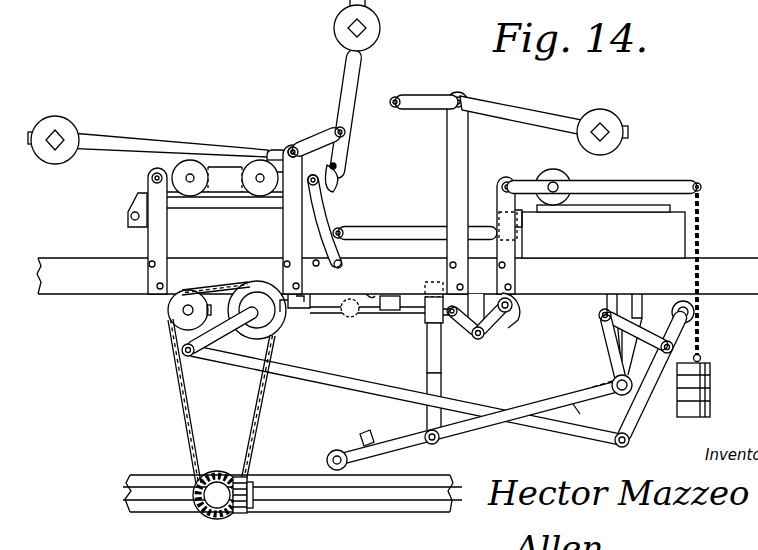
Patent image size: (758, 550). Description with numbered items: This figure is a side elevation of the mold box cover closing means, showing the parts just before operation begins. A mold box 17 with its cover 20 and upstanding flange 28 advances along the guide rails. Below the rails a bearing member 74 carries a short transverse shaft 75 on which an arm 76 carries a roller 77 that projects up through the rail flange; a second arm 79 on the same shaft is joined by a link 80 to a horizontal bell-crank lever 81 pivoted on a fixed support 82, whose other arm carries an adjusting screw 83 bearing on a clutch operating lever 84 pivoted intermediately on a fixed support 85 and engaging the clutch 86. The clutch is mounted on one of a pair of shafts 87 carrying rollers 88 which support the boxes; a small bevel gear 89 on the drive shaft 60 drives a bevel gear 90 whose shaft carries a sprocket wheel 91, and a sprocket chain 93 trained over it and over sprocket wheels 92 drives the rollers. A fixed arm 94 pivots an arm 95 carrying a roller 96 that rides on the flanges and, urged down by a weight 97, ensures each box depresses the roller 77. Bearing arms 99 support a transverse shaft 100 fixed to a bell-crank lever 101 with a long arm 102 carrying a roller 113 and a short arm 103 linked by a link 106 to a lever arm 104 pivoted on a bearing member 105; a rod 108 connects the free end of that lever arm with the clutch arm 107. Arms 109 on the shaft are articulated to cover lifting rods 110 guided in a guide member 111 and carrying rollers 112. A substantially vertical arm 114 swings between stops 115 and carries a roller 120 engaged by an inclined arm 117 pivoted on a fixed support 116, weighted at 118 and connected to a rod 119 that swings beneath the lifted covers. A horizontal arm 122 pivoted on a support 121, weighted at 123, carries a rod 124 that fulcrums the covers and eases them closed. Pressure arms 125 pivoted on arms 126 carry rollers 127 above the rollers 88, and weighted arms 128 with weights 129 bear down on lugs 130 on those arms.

The mold box 17 is at (147, 243).
The cover 20 is at (182, 209).
The flange 28 is at (655, 205).
The shaft 60 is at (352, 498).
The bearing member 74 is at (477, 294).
The shaft 75 is at (484, 340).
The arm 76 is at (500, 320).
The roller 77 is at (513, 306).
The second arm 79 is at (462, 325).
The link 80 is at (428, 315).
The bell-crank lever 81 is at (372, 314).
The fixed support 82 is at (387, 298).
The adjusting screw 83 is at (346, 320).
The clutch operating lever 84 is at (303, 310).
The fixed support 85 is at (292, 293).
The clutch 86 is at (65, 288).
The shafts 87 is at (180, 310).
The rollers 88 is at (206, 286).
The small bevel gear 89 is at (246, 511).
The small bevel gear 90 is at (212, 511).
The sprocket wheel 91 is at (222, 478).
The sprocket wheels 92 is at (172, 338).
The sprocket chain 93 is at (188, 412).
The arm 94 is at (498, 210).
The arm 95 is at (600, 184).
The roller 96 is at (543, 175).
The weight 97 is at (711, 385).
The bearing arms 99 is at (632, 312).
The shaft 100 is at (613, 378).
The bell-crank lever 101 is at (592, 415).
The long arm 102 is at (389, 446).
The short arm 103 is at (608, 342).
The lever arm 104 is at (642, 405).
The bearing member 105 is at (700, 303).
The link 106 is at (673, 343).
The arm 107 is at (212, 337).
The rod 108 is at (320, 378).
The arms 109 is at (473, 433).
The cover lifting rods 110 is at (442, 375).
The guide member 111 is at (427, 340).
The rollers 112 is at (430, 290).
The roller 113 is at (327, 460).
The arm 114 is at (323, 226).
The stops 115 is at (372, 283).
The fixed support 116 is at (318, 126).
The arm 117 is at (344, 75).
The weight 118 is at (368, 41).
The rod 119 is at (338, 172).
The roller 120 is at (336, 165).
The support 121 is at (447, 170).
The arm 122 is at (523, 118).
The weight 123 is at (612, 120).
The rod 124 is at (401, 110).
The arms 125 is at (235, 183).
The arms 126 is at (150, 200).
The rollers 127 is at (247, 168).
The arms 128 is at (132, 141).
The weight 129 is at (55, 117).
The lugs or pins 130 is at (274, 152).